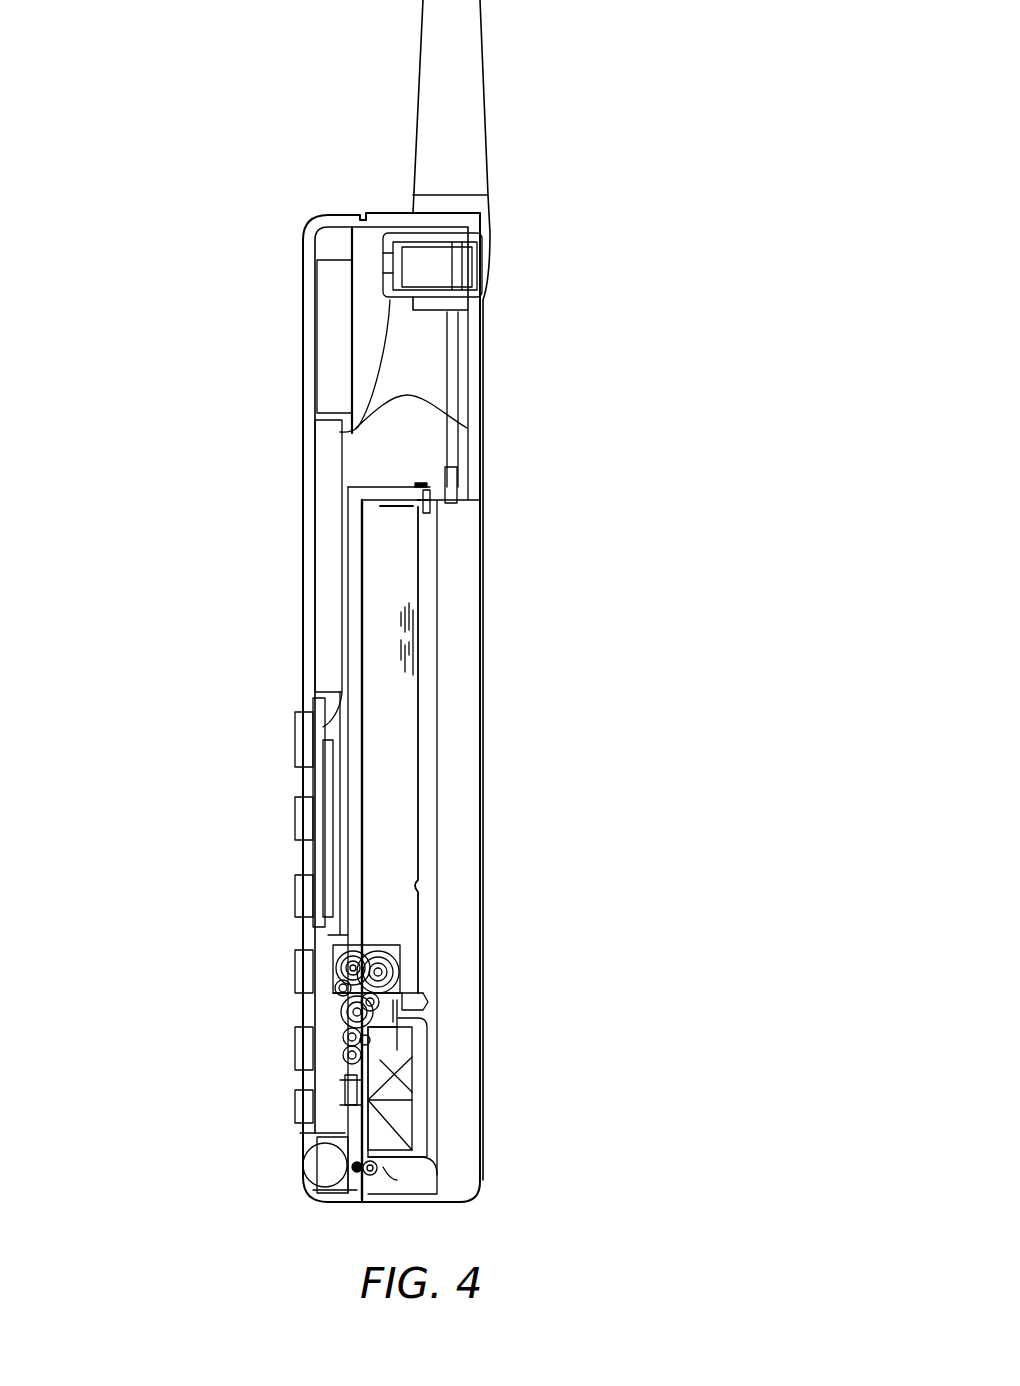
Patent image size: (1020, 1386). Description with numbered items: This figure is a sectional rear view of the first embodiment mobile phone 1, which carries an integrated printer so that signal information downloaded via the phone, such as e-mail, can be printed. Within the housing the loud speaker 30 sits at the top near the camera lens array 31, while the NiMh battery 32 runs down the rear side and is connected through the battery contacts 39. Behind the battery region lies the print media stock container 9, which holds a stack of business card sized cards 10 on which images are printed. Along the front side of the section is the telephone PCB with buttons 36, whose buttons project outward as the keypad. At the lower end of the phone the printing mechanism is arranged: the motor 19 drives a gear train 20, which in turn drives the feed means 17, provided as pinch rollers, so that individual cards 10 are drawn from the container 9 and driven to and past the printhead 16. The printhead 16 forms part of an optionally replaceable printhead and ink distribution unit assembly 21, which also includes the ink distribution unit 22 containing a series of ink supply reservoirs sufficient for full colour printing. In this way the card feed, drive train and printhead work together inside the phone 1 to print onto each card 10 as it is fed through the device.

The mobile phone 1 is at (620, 435).
The print media stock container 9 is at (355, 632).
The cards 10 is at (403, 812).
The printhead assembly 16 is at (372, 1098).
The feed means 17 is at (331, 1086).
The motor 19 is at (327, 1168).
The gear train 20 is at (343, 1047).
The printhead and ink distribution unit assembly 21 is at (425, 1125).
The ink distribution unit 22 is at (403, 1043).
The loud speaker 30 is at (330, 358).
The camera lens array 31 is at (480, 267).
The NiMh battery 32 is at (467, 660).
The telephone PCB with buttons 36 is at (320, 727).
The battery contacts 39 is at (433, 508).